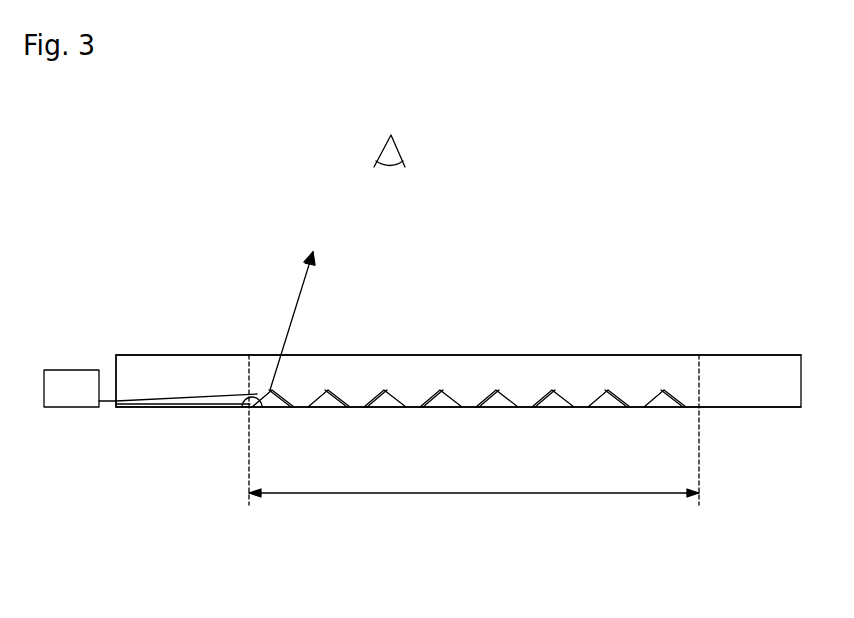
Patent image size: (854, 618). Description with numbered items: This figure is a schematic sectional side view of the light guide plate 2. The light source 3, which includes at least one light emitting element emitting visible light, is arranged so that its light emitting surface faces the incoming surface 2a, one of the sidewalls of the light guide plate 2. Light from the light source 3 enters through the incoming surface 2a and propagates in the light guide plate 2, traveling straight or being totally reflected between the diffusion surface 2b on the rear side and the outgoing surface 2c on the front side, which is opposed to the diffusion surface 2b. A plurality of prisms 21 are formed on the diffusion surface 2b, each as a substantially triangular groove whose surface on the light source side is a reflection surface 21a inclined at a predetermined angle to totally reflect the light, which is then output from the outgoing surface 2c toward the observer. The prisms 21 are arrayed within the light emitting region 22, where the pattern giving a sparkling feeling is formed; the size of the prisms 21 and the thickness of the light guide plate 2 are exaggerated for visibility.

The light guide plate 2 is at (794, 381).
The incoming surface 2a is at (115, 366).
The diffusion surface 2b is at (769, 407).
The outgoing surface 2c is at (762, 355).
The light source 3 is at (64, 408).
The prism 21 is at (387, 407).
The reflection surface 21a is at (250, 405).
The light emitting region 22 is at (474, 438).